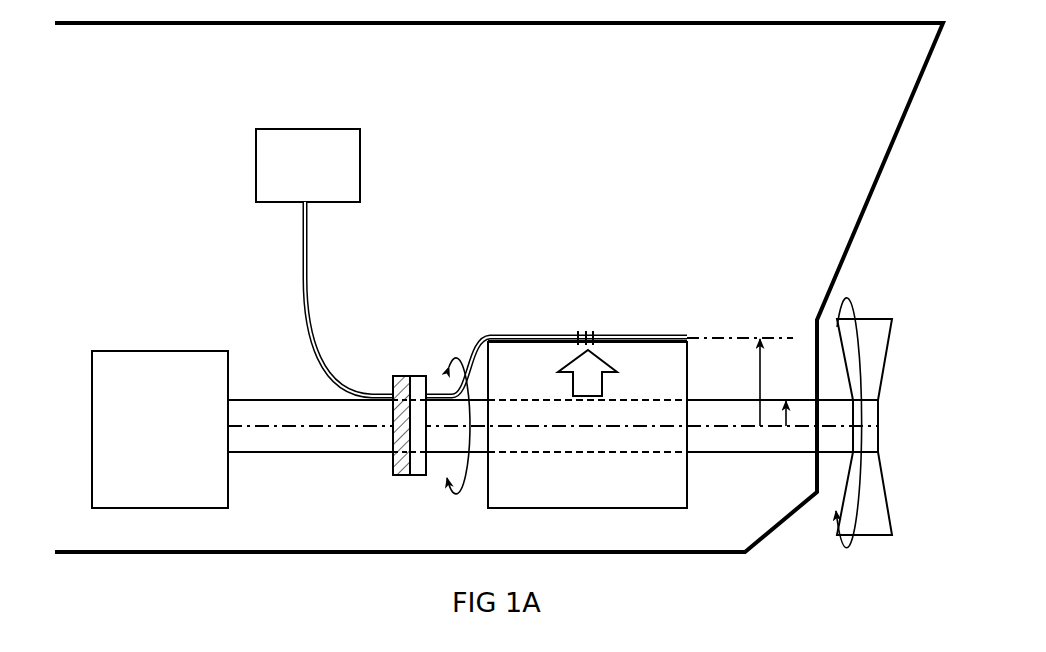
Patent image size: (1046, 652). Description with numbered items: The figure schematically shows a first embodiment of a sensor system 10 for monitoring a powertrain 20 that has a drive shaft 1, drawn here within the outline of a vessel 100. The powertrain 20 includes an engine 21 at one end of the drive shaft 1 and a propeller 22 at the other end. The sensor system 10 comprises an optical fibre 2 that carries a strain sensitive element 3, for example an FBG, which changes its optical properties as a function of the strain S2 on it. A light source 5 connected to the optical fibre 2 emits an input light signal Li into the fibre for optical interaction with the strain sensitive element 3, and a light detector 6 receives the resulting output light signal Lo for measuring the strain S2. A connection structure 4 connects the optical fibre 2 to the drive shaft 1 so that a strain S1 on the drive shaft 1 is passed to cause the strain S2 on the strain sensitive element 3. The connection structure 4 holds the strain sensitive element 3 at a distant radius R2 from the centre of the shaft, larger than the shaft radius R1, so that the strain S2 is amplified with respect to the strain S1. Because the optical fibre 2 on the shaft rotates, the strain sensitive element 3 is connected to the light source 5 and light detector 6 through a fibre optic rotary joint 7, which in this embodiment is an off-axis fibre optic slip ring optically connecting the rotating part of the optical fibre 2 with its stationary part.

The vessel hull 100 is at (873, 88).
The sensor system 10 is at (246, 117).
The powertrain 20 is at (185, 286).
The engine 21 is at (174, 441).
The light source 5 is at (308, 165).
The light detector 6 is at (308, 165).
The drive shaft 1 is at (273, 391).
The fibre optic rotary joint 7 is at (410, 372).
The optical fibre 2 is at (533, 331).
The strain sensitive element 3 is at (587, 330).
The connection structure 4 is at (694, 357).
The propeller 22 is at (878, 314).
The strain on the drive shaft S1 is at (602, 424).
The strain on the strain sensitive element S2 is at (605, 328).
The shaft radius R1 is at (785, 398).
The distant radius R2 is at (740, 366).
The input light signal Li is at (297, 220).
The output light signal Lo is at (321, 221).